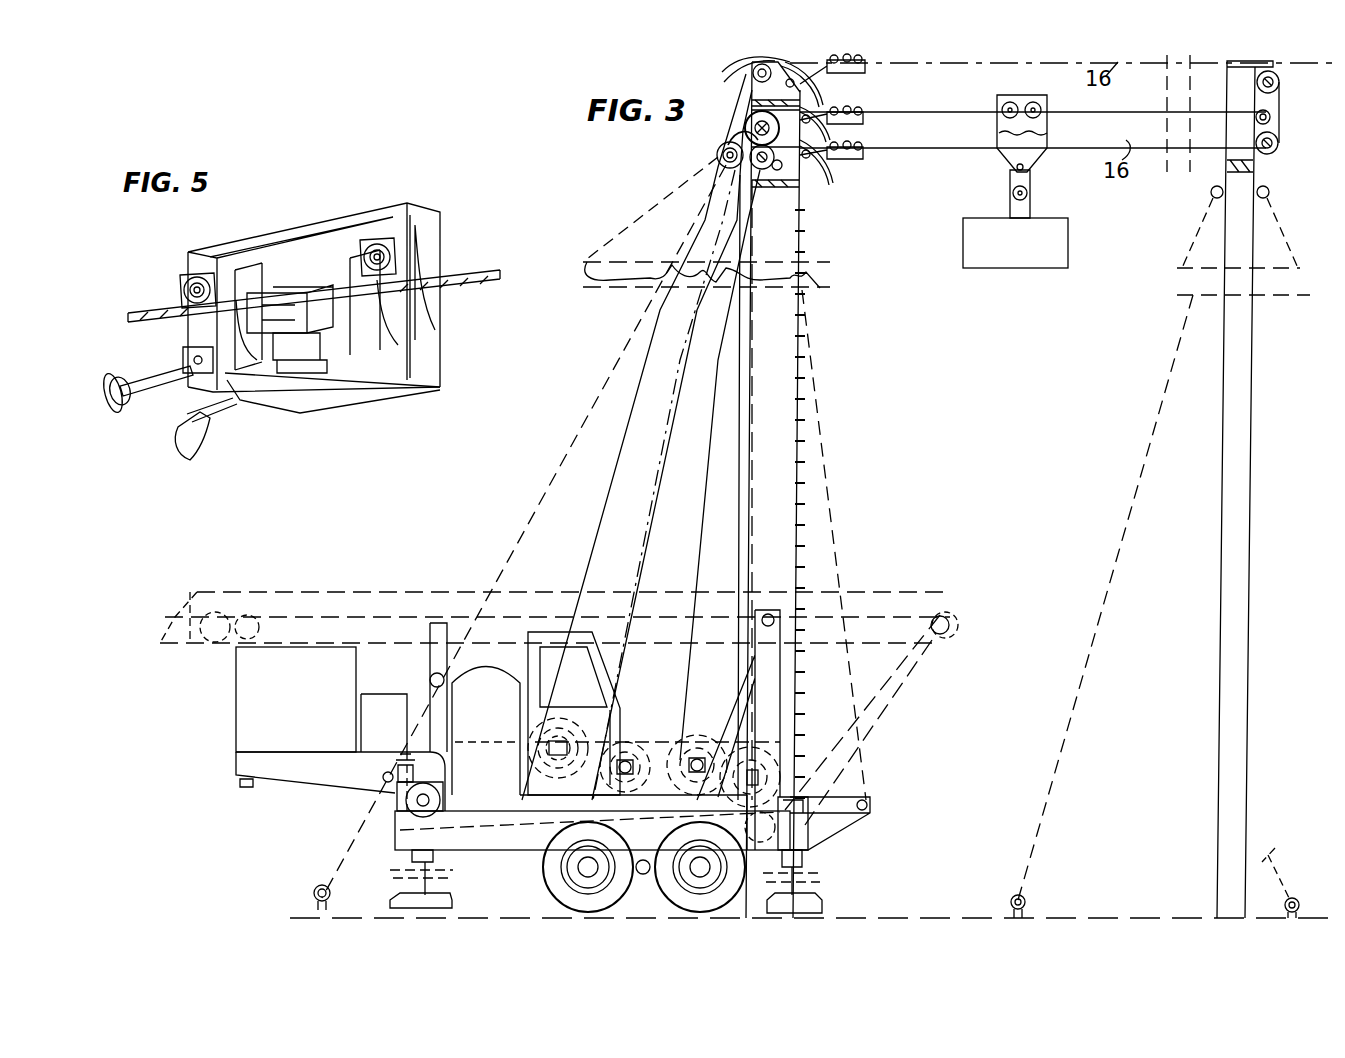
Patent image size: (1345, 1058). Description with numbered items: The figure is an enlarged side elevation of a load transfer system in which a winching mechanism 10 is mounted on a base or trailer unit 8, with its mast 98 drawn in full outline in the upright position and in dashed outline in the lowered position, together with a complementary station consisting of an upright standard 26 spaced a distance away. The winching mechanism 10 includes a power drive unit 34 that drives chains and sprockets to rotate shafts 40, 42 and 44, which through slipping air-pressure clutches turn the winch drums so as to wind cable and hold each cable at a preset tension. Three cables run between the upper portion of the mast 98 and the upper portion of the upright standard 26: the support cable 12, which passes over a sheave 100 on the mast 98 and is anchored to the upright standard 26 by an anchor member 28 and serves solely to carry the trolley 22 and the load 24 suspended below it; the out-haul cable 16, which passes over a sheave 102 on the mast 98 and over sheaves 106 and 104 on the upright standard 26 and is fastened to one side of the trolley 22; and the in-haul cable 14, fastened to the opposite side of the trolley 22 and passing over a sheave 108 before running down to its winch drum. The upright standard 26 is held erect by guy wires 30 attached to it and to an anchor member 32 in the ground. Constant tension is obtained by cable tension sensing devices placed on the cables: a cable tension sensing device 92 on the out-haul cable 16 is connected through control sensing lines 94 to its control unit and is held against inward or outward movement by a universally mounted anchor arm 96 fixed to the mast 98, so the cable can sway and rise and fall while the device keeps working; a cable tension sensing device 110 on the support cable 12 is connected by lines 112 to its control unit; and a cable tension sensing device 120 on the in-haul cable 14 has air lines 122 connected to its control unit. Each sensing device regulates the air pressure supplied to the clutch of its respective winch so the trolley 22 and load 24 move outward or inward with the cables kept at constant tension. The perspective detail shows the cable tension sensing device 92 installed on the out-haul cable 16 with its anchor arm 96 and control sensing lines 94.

In FIG. 3, the base or trailer unit 8 is at (488, 855).
In FIG. 3, the winching mechanism 10 is at (533, 630).
In FIG. 3, the support cable 12 is at (703, 535).
In FIG. 3, the in-haul cable 14 is at (655, 580).
In FIG. 3, the out-haul cable 16 is at (703, 232).
In FIG. 5, the out-haul cable 16 is at (468, 272).
In FIG. 3, the trolley 22 is at (1040, 133).
In FIG. 3, the load 24 is at (1025, 258).
In FIG. 3, the upright standard 26 is at (1220, 545).
In FIG. 3, the anchor member 28 is at (1274, 116).
In FIG. 3, the guy wires 30 is at (1210, 190).
In FIG. 3, the anchor member 32 is at (1026, 900).
In FIG. 3, the power drive unit 34 is at (478, 690).
In FIG. 3, the shaft 40 is at (560, 748).
In FIG. 3, the shaft 42 is at (628, 760).
In FIG. 3, the shaft 44 is at (698, 758).
In FIG. 3, the cable tension sensing device 92 is at (862, 66).
In FIG. 5, the cable tension sensing device 92 is at (316, 220).
In FIG. 3, the control sensing lines 94 is at (828, 82).
In FIG. 5, the control sensing lines 94 is at (178, 445).
In FIG. 3, the universally mounted anchor arm 96 is at (740, 82).
In FIG. 5, the universally mounted anchor arm 96 is at (148, 400).
In FIG. 3, the mast 98 is at (776, 450).
In FIG. 3, the sheave 100 is at (722, 150).
In FIG. 3, the sheave 102 is at (755, 80).
In FIG. 3, the sheave 104 is at (1280, 80).
In FIG. 3, the sheave 106 is at (1272, 146).
In FIG. 3, the sheave 108 is at (767, 160).
In FIG. 3, the cable tension sensing device 110 is at (865, 121).
In FIG. 3, the lines 112 is at (838, 124).
In FIG. 3, the cable tension sensing device 120 is at (862, 153).
In FIG. 3, the air lines 122 is at (830, 172).